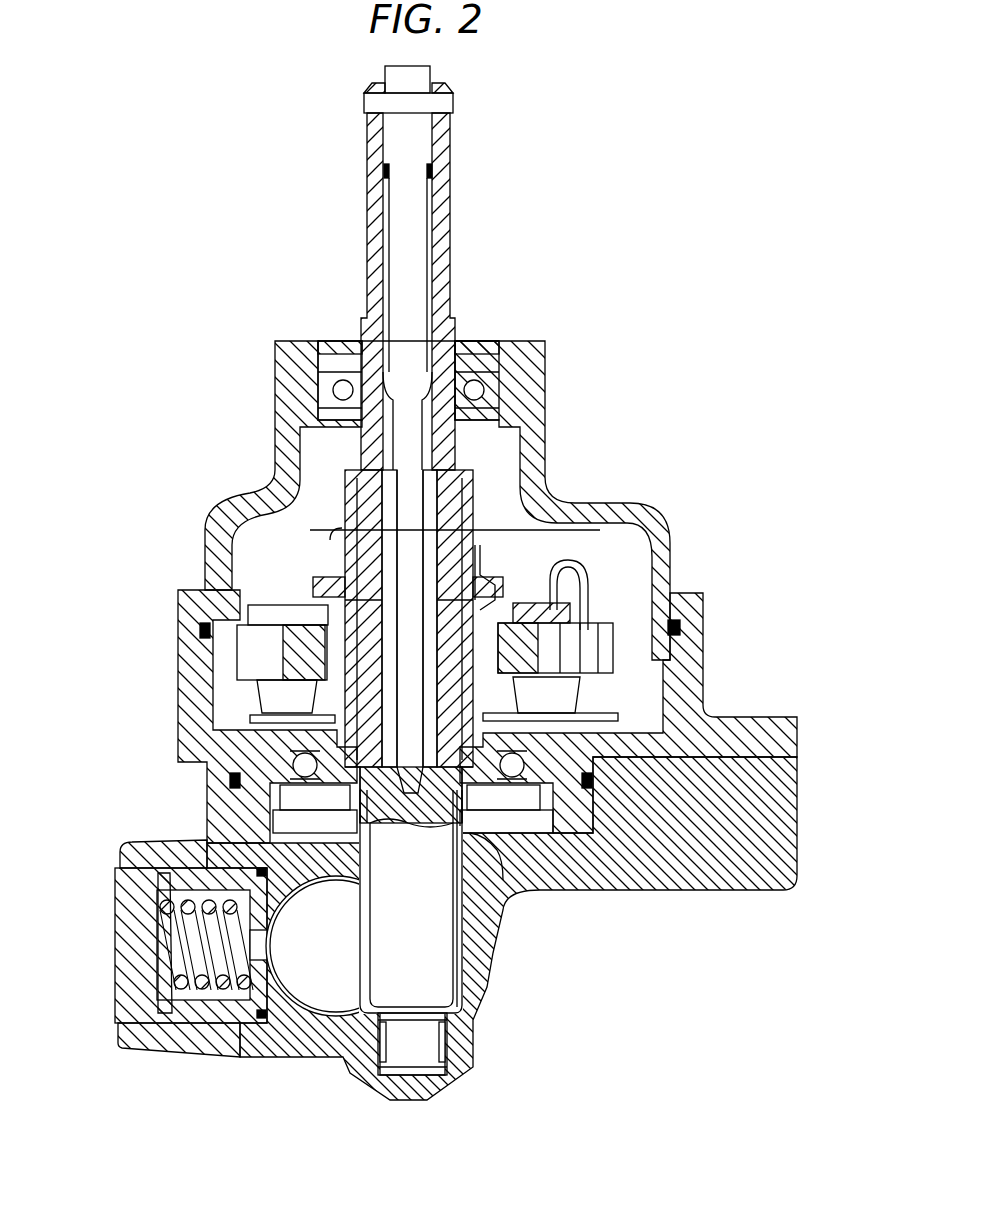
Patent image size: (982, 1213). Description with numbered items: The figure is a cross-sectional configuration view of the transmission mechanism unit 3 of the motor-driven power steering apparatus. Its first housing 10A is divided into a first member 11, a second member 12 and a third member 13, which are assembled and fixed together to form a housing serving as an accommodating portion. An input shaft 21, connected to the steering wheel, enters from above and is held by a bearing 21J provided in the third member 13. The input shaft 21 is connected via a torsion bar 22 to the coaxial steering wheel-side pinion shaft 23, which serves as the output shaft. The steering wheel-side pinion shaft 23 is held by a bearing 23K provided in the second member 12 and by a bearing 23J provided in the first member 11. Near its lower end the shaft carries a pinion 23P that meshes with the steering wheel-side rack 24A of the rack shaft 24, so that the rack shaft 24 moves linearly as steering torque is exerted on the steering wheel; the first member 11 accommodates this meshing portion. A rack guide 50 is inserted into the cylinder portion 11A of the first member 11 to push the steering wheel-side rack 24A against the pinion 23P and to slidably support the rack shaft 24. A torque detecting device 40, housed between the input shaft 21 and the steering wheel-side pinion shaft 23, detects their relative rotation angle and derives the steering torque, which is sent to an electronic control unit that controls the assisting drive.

The transmission mechanism unit 3 is at (246, 228).
The input shaft 21 is at (453, 158).
The torsion bar 22 is at (415, 262).
The first housing 10A is at (555, 352).
The bearing 21J is at (340, 388).
The third member 13 is at (546, 400).
The torque detecting device 40 is at (628, 628).
The second member 12 is at (706, 655).
The cylinder portion 11A is at (168, 842).
The rack guide 50 is at (105, 860).
The steering wheel-side pinion shaft 23 is at (425, 890).
The bearing 23K is at (572, 758).
The first member 11 is at (727, 890).
The pinion 23P is at (462, 950).
The bearing 23J is at (445, 1043).
The rack shaft 24 is at (305, 982).
The steering wheel-side rack 24A is at (360, 992).